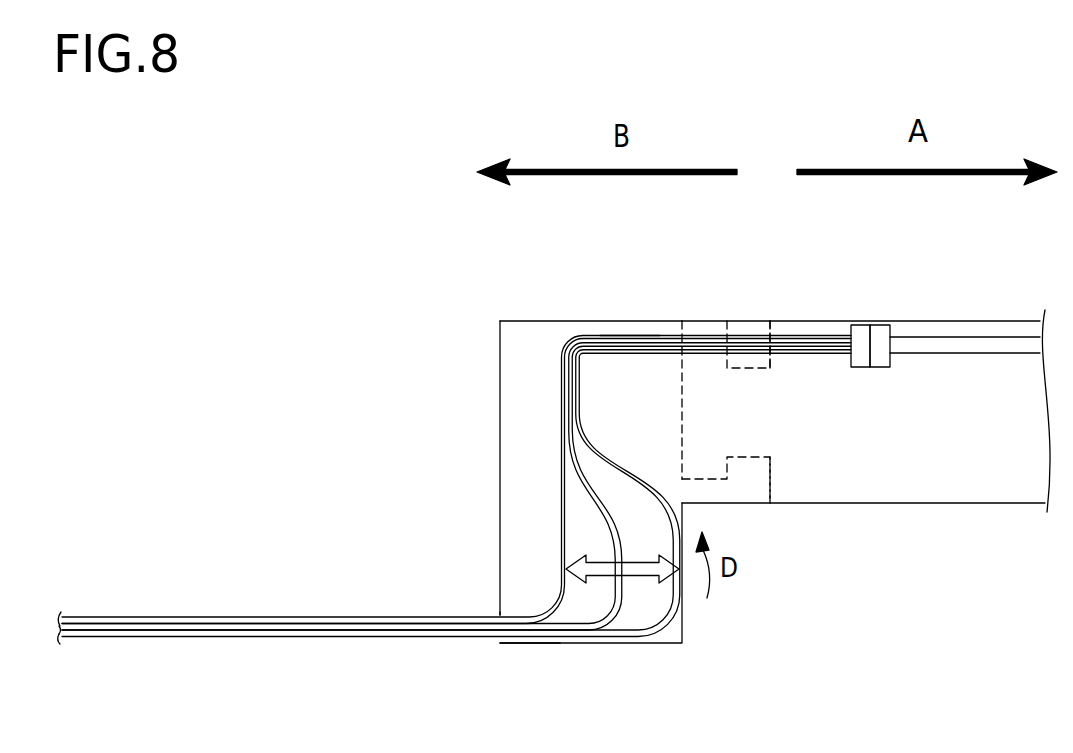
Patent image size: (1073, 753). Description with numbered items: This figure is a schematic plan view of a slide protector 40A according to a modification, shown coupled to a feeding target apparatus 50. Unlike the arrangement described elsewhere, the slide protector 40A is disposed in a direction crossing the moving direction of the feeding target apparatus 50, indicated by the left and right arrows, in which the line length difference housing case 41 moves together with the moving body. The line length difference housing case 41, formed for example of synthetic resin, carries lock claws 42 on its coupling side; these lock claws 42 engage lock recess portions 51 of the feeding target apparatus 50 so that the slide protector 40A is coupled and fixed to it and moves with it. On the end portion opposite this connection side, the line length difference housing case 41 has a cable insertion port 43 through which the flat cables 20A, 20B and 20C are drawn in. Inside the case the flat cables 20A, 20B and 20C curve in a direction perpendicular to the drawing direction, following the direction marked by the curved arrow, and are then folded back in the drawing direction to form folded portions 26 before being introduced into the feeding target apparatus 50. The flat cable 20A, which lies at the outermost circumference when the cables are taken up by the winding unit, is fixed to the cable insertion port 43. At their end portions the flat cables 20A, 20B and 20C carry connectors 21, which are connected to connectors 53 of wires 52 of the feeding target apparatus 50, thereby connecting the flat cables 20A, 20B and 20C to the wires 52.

The flat cable 20A is at (552, 610).
The flat cable 20B is at (612, 610).
The flat cable 20C is at (665, 612).
The connector 21 is at (861, 325).
The folded portion 26 is at (608, 335).
The slide protector 40A is at (539, 322).
The line length difference housing case 41 is at (498, 462).
The lock claw 42 is at (769, 331).
The cable insertion port 43 is at (498, 606).
The feeding target apparatus 50 is at (893, 503).
The lock recess portion 51 is at (766, 328).
The wire 52 is at (991, 336).
The connector 53 is at (875, 324).